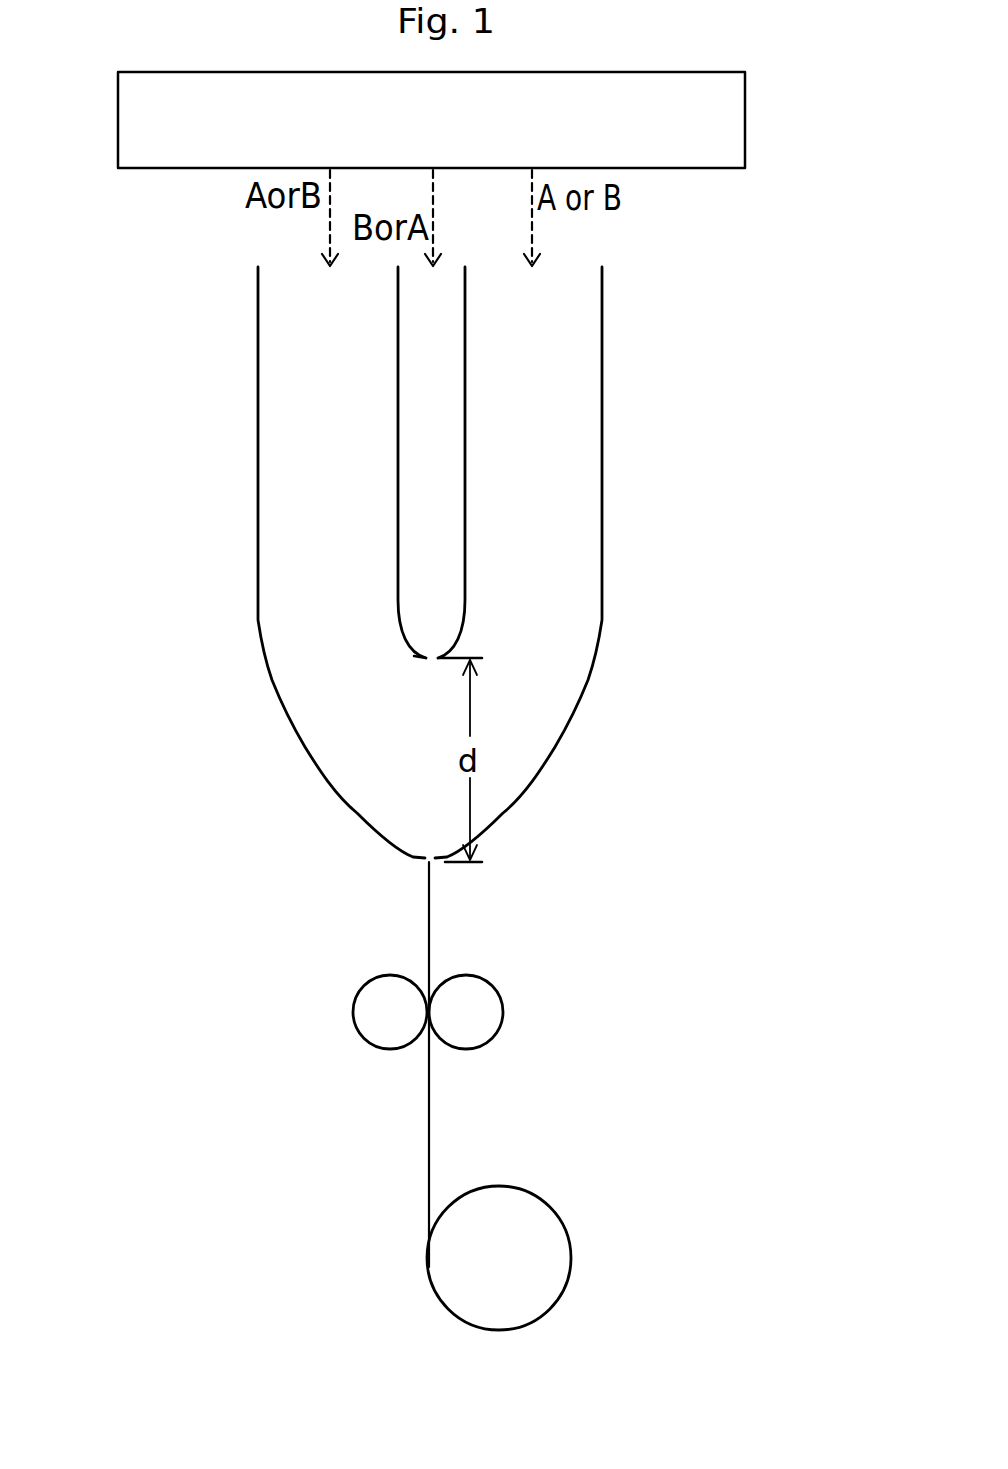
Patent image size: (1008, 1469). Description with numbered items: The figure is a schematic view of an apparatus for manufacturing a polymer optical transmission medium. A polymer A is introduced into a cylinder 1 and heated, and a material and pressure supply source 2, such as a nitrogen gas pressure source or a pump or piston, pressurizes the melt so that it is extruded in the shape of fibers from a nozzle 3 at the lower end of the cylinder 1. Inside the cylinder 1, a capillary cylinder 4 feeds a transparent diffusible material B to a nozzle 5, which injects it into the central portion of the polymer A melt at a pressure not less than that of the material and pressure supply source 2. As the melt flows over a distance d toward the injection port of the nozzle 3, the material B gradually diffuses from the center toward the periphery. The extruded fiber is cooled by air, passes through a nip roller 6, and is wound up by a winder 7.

The cylinder 1 is at (603, 490).
The material and pressure supply source 2 is at (270, 138).
The nozzle 3 is at (483, 853).
The capillary cylinder 4 is at (470, 357).
The nozzle 5 is at (412, 658).
The nip roller 6 is at (482, 972).
The winder 7 is at (502, 1177).